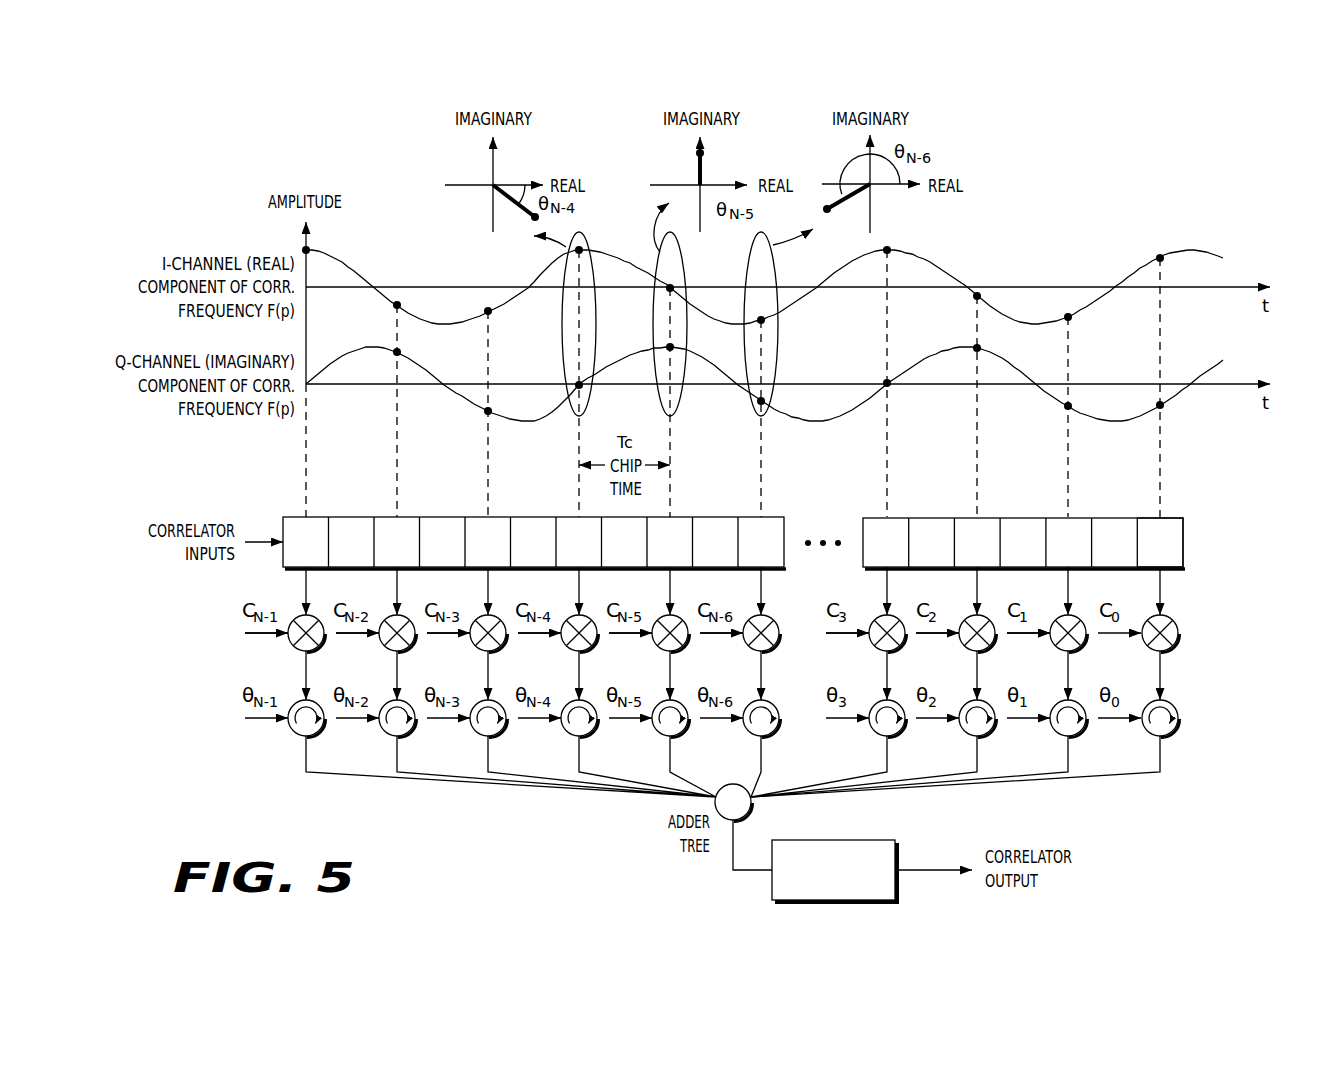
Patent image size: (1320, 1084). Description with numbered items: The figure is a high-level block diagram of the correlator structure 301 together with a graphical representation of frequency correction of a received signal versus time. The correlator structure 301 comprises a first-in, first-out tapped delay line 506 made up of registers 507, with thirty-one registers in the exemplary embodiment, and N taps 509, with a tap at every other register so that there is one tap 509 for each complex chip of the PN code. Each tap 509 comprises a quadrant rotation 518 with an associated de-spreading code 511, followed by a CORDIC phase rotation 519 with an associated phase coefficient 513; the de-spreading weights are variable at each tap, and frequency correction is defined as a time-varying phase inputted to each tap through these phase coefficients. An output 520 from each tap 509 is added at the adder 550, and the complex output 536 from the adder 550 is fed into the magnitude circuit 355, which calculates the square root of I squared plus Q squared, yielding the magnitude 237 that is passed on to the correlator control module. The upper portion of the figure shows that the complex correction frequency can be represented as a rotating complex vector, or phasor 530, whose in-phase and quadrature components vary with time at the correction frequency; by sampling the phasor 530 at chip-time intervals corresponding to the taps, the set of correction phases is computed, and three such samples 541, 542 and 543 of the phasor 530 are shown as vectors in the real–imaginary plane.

The correlator structure 301 is at (458, 809).
The tapped delay line 506 is at (1198, 542).
The register 507 is at (1172, 517).
The tap 509 is at (1162, 586).
The de-spreading code 511 is at (1114, 636).
The phase coefficient 513 is at (1112, 720).
The quadrant rotation 518 is at (1177, 647).
The CORDIC phase rotation 519 is at (1175, 731).
The tap output 520 is at (1092, 777).
The phasor 530 is at (341, 267).
The complex output 536 is at (745, 872).
The phasor sample 541 is at (533, 220).
The phasor sample 542 is at (705, 153).
The phasor sample 543 is at (829, 214).
The adder 550 is at (718, 785).
The magnitude circuit 355 is at (855, 840).
The magnitude 237 is at (933, 869).